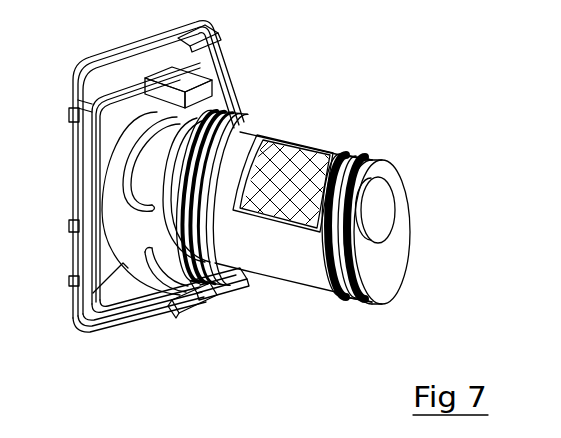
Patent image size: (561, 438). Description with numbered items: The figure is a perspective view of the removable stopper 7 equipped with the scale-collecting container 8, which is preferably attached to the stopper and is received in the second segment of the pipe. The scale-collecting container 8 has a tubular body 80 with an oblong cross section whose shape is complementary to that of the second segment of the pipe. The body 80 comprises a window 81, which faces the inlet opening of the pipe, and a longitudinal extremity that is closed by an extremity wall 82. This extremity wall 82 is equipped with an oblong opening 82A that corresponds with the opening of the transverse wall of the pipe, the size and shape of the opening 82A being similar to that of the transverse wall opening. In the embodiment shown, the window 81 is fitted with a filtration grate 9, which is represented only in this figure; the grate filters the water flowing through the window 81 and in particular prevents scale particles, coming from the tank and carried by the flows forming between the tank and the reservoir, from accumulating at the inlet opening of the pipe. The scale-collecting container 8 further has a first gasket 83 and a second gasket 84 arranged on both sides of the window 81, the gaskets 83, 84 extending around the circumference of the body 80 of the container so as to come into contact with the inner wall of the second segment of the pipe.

The removable stopper 7 is at (87, 331).
The scale-collecting container 8 is at (383, 293).
The filtration grate 9 is at (292, 170).
The tubular body 80 is at (285, 273).
The window 81 is at (331, 153).
The extremity wall 82 is at (392, 257).
The oblong opening 82A is at (383, 198).
The first gasket 83 is at (348, 290).
The second gasket 84 is at (210, 284).